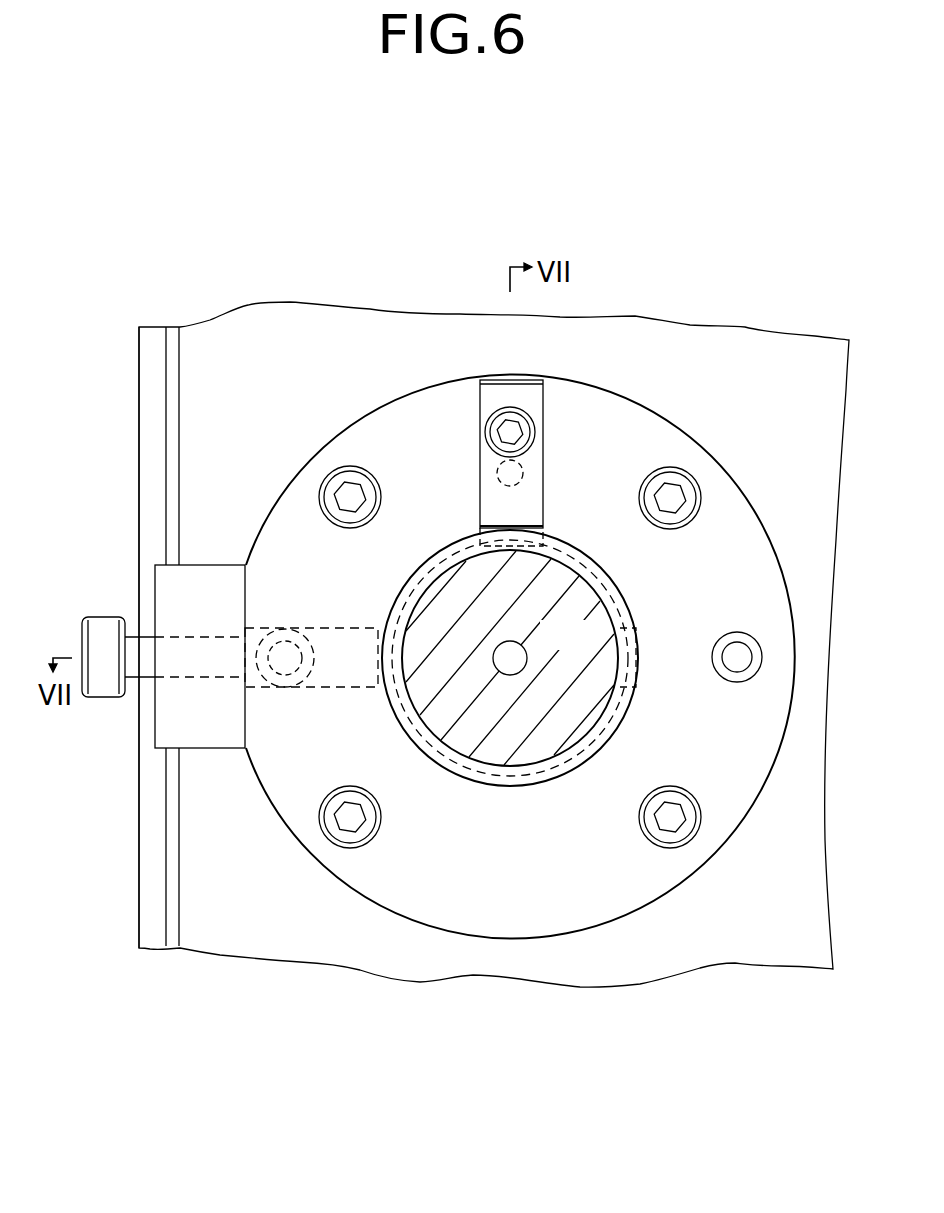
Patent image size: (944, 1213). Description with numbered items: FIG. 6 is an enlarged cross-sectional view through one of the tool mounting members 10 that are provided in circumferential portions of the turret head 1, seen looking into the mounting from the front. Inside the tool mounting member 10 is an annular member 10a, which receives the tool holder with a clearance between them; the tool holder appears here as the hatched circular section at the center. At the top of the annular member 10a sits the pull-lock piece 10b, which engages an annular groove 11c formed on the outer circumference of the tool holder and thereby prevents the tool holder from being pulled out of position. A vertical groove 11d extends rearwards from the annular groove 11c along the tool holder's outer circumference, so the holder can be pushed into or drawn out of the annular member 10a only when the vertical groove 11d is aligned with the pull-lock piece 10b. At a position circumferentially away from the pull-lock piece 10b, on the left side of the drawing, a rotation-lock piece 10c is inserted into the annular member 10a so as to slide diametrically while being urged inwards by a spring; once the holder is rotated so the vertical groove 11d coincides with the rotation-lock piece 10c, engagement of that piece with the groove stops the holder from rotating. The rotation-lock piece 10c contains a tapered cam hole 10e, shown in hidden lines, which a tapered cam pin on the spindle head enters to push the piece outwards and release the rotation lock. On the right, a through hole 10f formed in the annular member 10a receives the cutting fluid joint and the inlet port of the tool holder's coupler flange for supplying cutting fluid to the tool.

The turret head 1 is at (147, 459).
The tool mounting member 10 is at (699, 874).
The annular member 10a is at (722, 534).
The pull-lock piece 10b is at (535, 462).
The rotation-lock piece 10c is at (330, 690).
The tapered cam hole 10e is at (288, 634).
The through hole 10f is at (742, 658).
The annular groove 11c is at (622, 640).
The vertical groove 11d is at (378, 628).